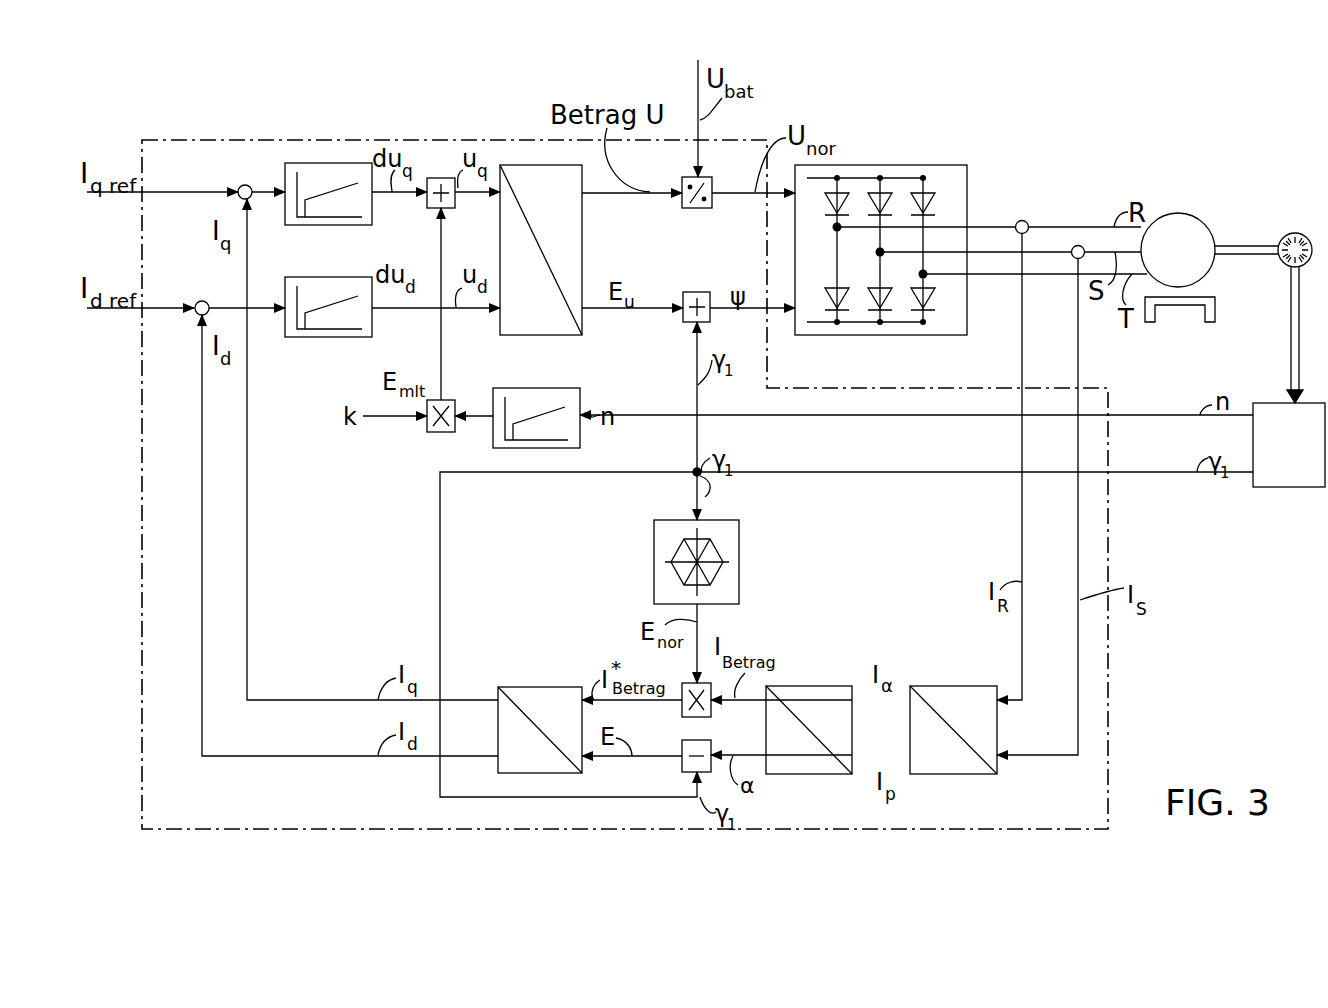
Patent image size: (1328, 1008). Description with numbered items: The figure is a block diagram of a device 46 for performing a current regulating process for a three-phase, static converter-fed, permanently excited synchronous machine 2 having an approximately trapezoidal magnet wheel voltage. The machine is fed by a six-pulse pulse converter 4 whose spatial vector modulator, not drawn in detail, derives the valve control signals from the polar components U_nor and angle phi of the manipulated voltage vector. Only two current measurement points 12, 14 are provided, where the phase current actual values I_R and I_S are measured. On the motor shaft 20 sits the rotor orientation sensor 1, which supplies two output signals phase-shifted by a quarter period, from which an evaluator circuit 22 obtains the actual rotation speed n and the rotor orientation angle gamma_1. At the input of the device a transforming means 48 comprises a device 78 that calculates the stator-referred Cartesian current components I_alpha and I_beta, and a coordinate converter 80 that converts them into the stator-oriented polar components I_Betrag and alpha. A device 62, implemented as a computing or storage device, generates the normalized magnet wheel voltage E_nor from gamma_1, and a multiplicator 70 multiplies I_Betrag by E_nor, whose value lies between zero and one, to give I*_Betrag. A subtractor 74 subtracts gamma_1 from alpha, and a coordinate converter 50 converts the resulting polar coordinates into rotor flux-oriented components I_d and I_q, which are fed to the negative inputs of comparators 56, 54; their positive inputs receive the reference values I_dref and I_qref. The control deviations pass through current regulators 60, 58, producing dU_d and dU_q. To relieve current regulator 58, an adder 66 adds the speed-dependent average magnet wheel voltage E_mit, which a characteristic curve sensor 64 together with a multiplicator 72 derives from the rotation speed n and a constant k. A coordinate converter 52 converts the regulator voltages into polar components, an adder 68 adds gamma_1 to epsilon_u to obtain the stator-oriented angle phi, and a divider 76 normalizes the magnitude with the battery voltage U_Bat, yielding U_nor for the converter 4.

The rotor position sensor 1 is at (1298, 233).
The synchronous machine 2 is at (1180, 213).
The converter 4 is at (905, 165).
The current measurement point 12 is at (1020, 220).
The current measurement point 14 is at (1077, 245).
The motor shaft 20 is at (1232, 246).
The evaluator circuit 22 is at (1292, 487).
The device 46 is at (1108, 722).
The transforming means 48 is at (908, 638).
The coordinate converter 50 is at (566, 687).
The coordinate converter 52 is at (535, 335).
The comparator 54 is at (245, 185).
The comparator 56 is at (202, 301).
The current regulator 58 is at (322, 225).
The current regulator 60 is at (320, 277).
The device for generating normalized magnet wheel voltage 62 is at (739, 545).
The characteristic curve sensor 64 is at (535, 388).
The adder 66 is at (427, 206).
The adder 68 is at (698, 292).
The multiplicator 70 is at (686, 717).
The multiplicator 72 is at (438, 432).
The subtractor 74 is at (684, 772).
The divider 76 is at (690, 177).
The device for calculating current components 78 is at (940, 686).
The coordinate converter 80 is at (792, 686).